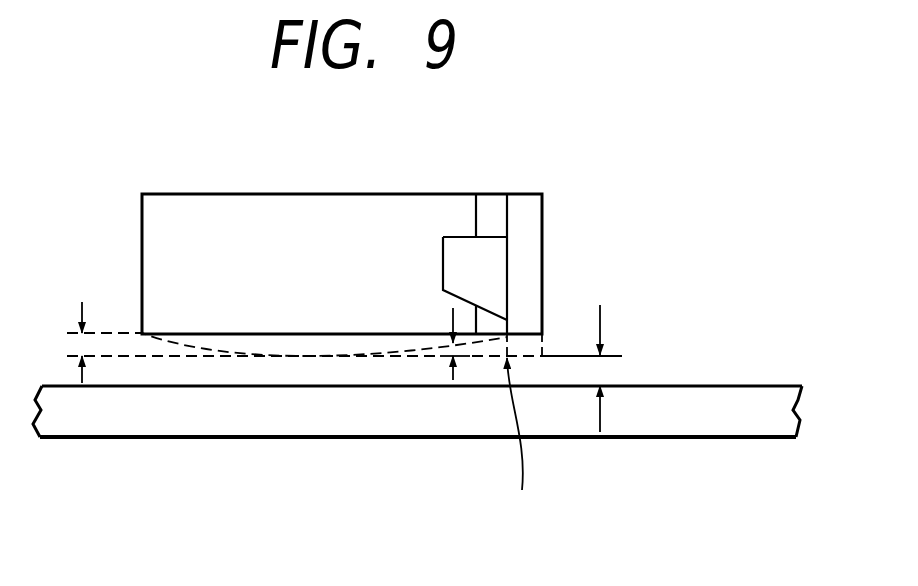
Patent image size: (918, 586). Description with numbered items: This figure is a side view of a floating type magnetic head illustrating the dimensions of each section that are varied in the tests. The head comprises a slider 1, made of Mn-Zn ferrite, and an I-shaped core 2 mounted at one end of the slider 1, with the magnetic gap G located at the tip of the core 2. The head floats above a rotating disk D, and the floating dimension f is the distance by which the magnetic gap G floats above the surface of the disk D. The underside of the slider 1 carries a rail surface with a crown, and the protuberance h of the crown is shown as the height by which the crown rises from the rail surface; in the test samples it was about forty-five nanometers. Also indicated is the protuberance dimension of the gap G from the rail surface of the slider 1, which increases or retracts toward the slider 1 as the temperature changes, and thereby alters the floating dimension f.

The slider 1 is at (310, 215).
The I-shaped core 2 is at (527, 282).
The disk D is at (352, 412).
The magnetic gap G is at (523, 447).
The protuberance of the crown h is at (63, 342).
The floating dimension f is at (619, 368).